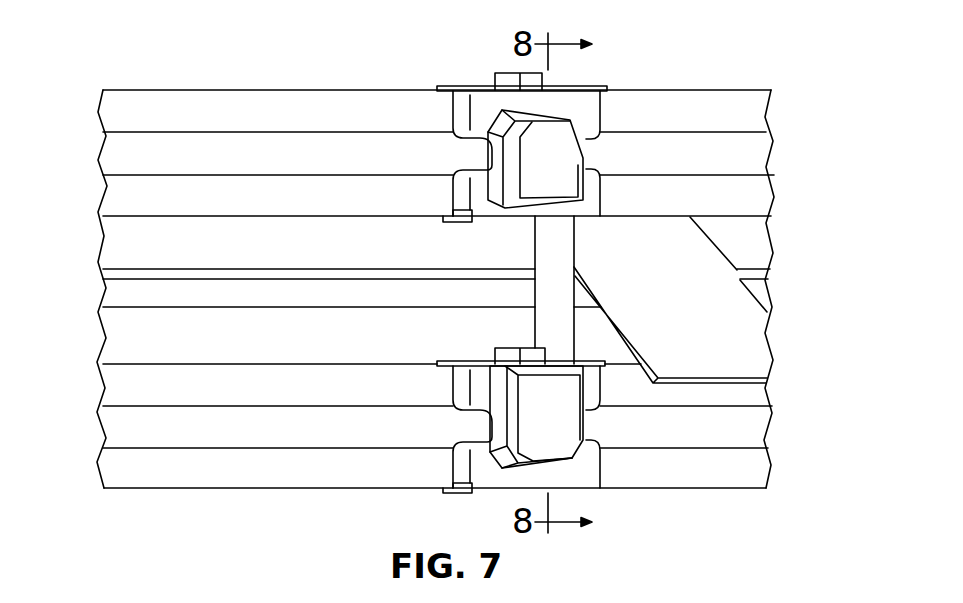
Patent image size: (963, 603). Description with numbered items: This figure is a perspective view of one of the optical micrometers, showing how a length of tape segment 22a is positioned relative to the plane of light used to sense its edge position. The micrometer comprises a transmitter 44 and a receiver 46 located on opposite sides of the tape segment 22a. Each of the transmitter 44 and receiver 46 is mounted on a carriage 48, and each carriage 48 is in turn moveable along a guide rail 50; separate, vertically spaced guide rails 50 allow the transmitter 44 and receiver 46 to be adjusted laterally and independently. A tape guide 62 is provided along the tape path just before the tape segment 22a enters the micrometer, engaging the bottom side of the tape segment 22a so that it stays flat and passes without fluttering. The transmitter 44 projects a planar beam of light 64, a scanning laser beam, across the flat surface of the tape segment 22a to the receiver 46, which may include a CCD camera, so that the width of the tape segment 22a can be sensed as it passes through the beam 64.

The tape segment 22a is at (715, 343).
The transmitter 44 is at (557, 148).
The receiver 46 is at (548, 420).
The carriage 48 is at (483, 108).
The guide rail 50 is at (138, 158).
The tape guide 62 is at (123, 288).
The planar beam of light 64 is at (556, 246).